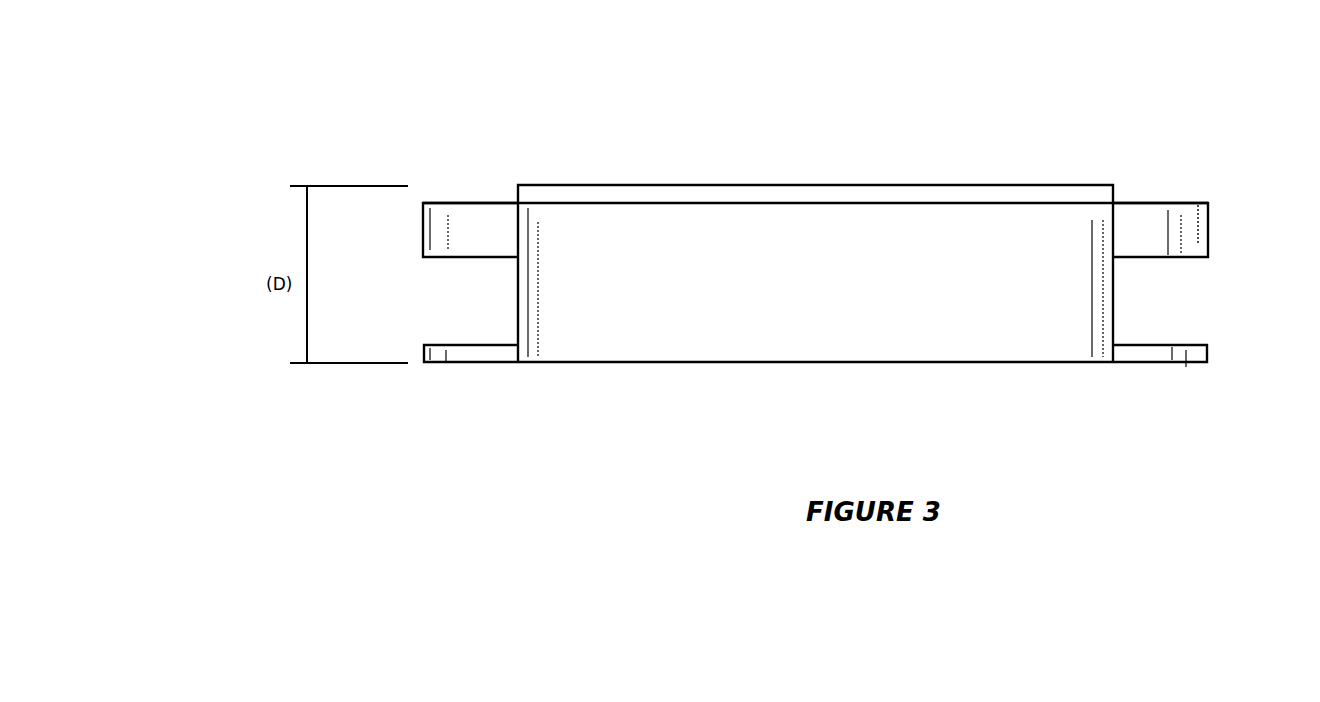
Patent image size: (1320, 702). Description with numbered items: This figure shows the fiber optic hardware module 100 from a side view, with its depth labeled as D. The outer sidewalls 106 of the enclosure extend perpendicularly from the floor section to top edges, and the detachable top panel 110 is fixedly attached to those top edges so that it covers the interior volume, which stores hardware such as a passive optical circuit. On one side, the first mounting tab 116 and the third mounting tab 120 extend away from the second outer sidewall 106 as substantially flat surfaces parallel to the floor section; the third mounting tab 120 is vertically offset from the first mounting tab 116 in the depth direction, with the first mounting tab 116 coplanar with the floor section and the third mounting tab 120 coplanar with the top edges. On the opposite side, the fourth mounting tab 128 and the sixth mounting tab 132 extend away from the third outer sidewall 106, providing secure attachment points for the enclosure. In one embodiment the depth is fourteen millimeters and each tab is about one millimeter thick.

The fiber optic hardware module 100 is at (546, 70).
The outer sidewalls 106 is at (742, 312).
The detachable top panel 110 is at (870, 185).
The third mounting tab 120 is at (465, 203).
The first mounting tab 116 is at (437, 358).
The sixth mounting tab 132 is at (1210, 228).
The fourth mounting tab 128 is at (1208, 356).